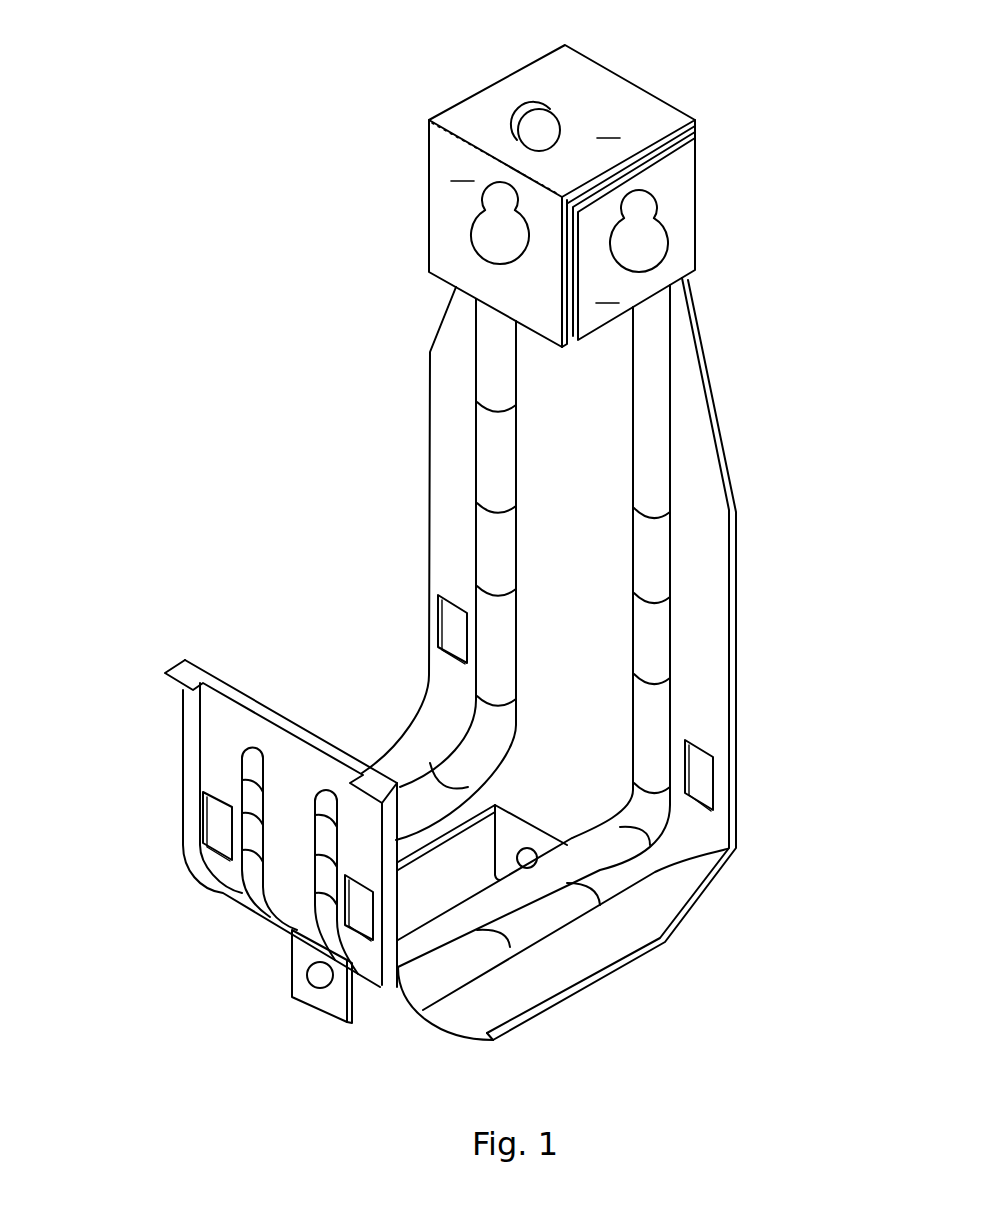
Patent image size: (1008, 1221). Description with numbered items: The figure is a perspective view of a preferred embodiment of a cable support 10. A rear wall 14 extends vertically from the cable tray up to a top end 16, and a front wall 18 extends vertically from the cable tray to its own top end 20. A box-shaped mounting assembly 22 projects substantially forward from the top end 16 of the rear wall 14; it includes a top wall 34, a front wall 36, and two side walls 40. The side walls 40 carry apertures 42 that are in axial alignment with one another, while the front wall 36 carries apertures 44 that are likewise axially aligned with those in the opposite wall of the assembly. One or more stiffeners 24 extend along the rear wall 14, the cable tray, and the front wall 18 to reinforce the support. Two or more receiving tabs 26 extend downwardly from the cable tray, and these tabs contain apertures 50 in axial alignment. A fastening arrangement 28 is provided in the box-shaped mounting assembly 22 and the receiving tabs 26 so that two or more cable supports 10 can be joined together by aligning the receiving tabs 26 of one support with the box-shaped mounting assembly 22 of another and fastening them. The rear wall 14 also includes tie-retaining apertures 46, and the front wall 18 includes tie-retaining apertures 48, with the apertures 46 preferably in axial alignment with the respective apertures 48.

The cable support 10 is at (497, 540).
The rear wall 14 is at (575, 659).
The top end 16 is at (684, 279).
The front wall 18 is at (306, 784).
The top end 20 is at (232, 682).
The box-shaped mounting assembly 22 is at (517, 173).
The stiffeners 24 is at (509, 386).
The receiving tabs 26 is at (386, 924).
The fastening arrangement 28 is at (372, 210).
The top wall 34 is at (609, 127).
The front wall 36 is at (463, 170).
The side walls 40 is at (608, 292).
The apertures 42 is at (640, 243).
The apertures 44 is at (500, 235).
The tie-retaining apertures 46 is at (452, 630).
The tie-retaining apertures 48 is at (220, 823).
The apertures 50 is at (320, 975).